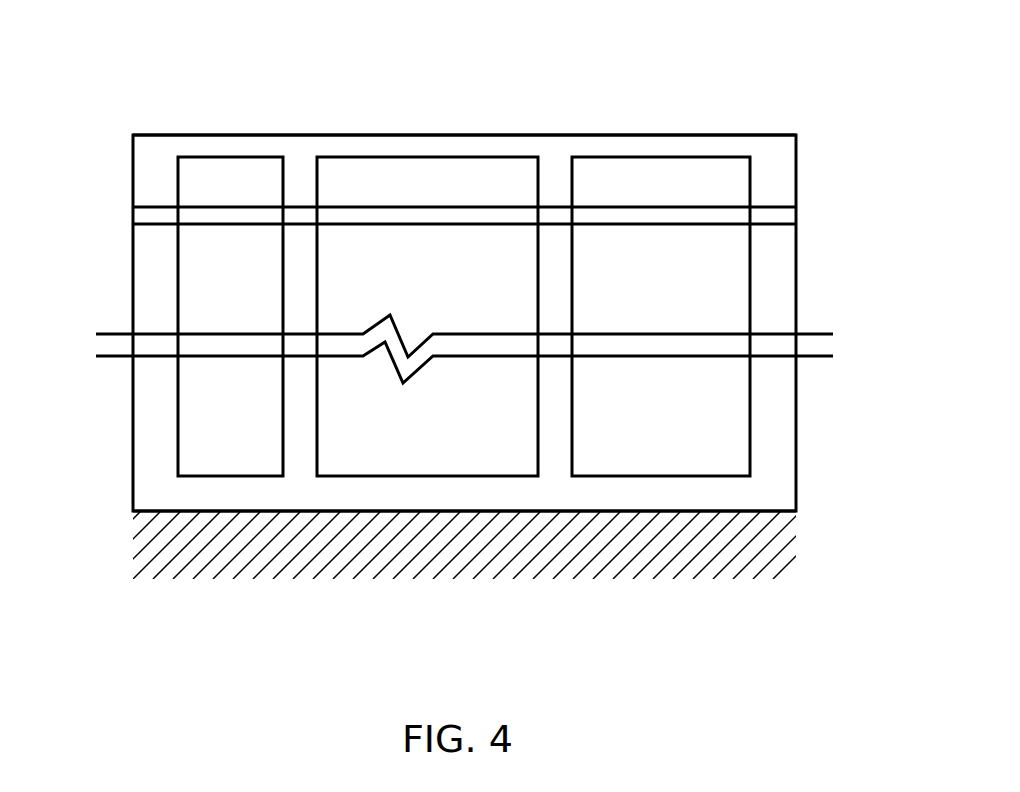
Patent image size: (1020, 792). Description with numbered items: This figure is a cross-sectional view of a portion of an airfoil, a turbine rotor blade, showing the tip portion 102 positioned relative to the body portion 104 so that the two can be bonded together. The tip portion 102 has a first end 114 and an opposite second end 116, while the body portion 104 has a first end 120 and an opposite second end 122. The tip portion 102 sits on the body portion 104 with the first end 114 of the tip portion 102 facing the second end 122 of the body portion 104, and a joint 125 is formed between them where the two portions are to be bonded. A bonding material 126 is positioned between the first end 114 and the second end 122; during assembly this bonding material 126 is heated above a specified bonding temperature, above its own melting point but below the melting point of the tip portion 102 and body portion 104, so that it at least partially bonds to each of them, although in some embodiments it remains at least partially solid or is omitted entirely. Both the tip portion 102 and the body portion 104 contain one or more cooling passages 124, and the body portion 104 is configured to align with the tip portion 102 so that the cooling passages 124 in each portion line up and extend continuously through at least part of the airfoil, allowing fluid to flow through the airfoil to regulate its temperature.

The tip portion 102 is at (472, 344).
The body portion 104 is at (107, 465).
The first end 114 is at (142, 165).
The second end 116 is at (480, 135).
The first end 120 is at (742, 513).
The second end 122 is at (767, 225).
The cooling passages 124 is at (223, 168).
The joint 125 is at (465, 218).
The bonding material 126 is at (132, 215).